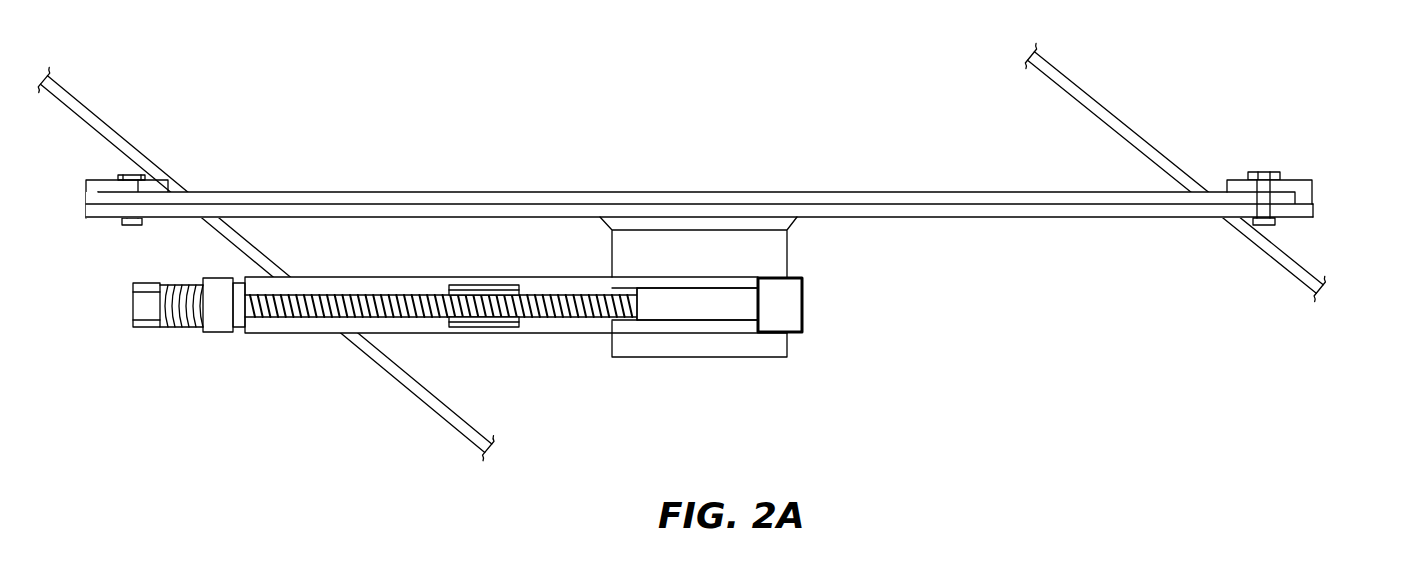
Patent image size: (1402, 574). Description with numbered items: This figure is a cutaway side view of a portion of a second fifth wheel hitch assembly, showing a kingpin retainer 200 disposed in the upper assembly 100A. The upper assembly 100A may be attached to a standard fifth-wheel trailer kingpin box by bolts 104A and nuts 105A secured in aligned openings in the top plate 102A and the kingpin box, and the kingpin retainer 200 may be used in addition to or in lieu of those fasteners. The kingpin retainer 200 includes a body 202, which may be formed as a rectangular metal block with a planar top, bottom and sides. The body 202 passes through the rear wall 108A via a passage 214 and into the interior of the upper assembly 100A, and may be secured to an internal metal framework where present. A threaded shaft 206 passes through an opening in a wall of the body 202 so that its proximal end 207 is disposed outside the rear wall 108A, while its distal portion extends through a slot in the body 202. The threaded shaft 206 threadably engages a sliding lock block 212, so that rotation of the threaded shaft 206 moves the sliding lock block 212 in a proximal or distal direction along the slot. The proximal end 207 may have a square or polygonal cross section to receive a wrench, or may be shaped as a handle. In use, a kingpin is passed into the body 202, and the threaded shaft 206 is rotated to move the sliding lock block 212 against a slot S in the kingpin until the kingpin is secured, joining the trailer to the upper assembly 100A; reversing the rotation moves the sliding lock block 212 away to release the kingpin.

The upper assembly 100A is at (1257, 317).
The top plate 102A is at (1133, 192).
The bolts 104A is at (1265, 172).
The nuts 105A is at (1272, 223).
The rear wall 108A is at (415, 392).
The kingpin retainer 200 is at (524, 357).
The body 202 is at (803, 300).
The threaded shaft 206 is at (333, 305).
The proximal end 207 is at (133, 302).
The sliding lock block 212 is at (472, 288).
The passage 214 is at (251, 271).
The slot S is at (665, 305).